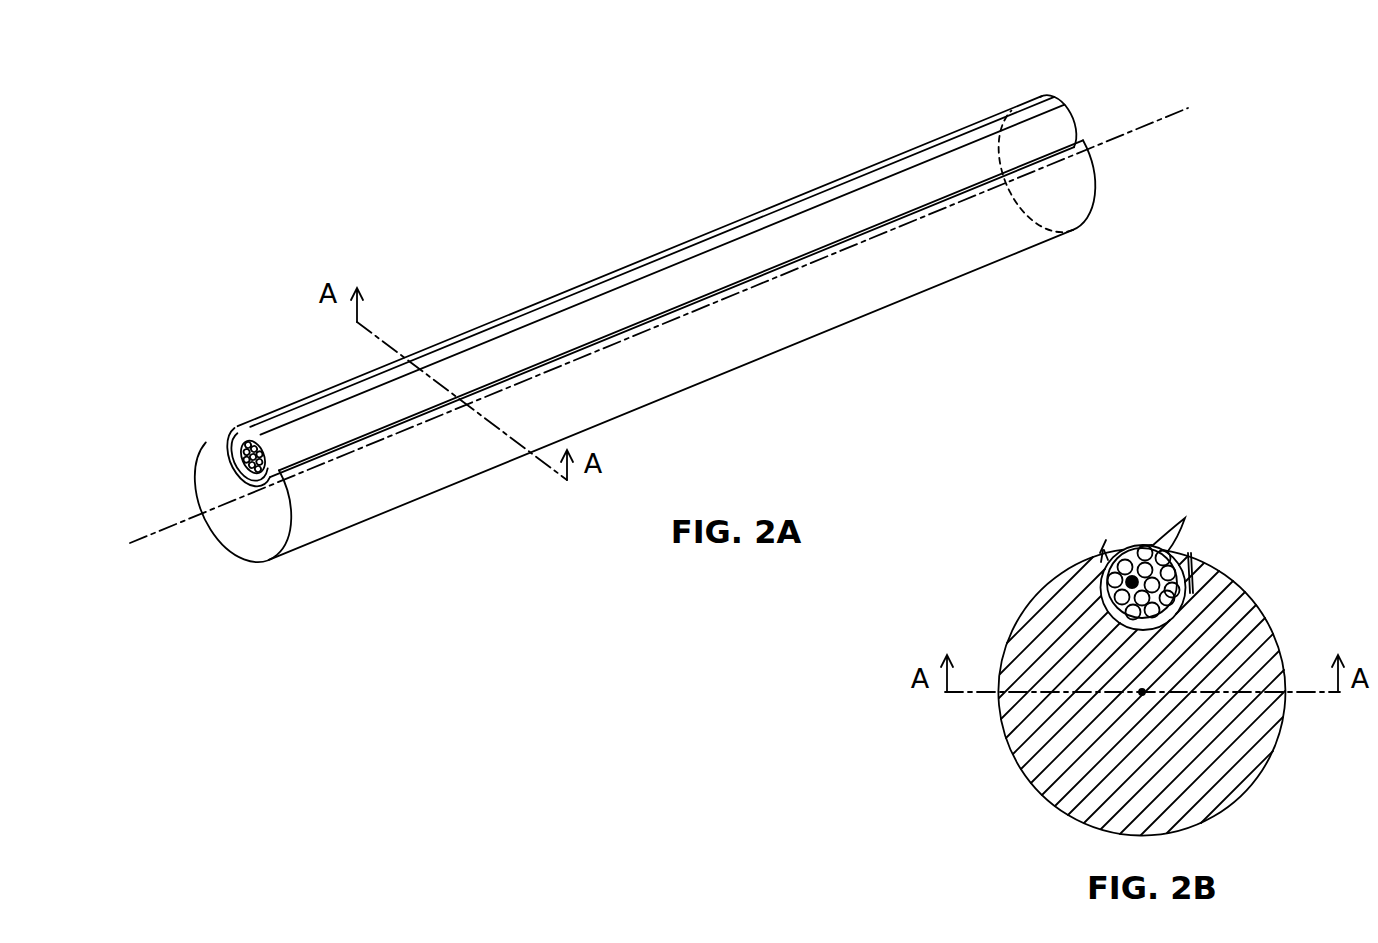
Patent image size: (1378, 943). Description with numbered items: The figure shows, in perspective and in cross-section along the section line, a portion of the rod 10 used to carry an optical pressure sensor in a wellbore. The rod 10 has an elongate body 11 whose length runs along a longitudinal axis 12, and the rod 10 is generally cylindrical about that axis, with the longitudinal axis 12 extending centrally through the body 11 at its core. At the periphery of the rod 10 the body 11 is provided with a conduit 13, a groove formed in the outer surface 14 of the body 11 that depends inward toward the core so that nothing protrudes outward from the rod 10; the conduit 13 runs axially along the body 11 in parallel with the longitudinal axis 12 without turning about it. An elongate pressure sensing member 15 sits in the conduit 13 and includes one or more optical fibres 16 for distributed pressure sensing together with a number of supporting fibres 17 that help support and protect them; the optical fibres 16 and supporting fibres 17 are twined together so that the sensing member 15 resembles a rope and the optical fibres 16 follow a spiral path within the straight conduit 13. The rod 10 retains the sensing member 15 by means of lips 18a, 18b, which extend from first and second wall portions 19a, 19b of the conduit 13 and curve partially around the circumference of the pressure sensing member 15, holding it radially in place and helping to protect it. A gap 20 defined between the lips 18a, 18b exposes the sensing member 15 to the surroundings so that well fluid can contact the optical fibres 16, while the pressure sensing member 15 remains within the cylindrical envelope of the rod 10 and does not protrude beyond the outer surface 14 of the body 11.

In FIG. 2A, the rod 10 is at (731, 147).
In FIG. 2B, the rod 10 is at (1309, 578).
In FIG. 2A, the elongate body 11 is at (243, 548).
In FIG. 2B, the elongate body 11 is at (1053, 773).
In FIG. 2A, the longitudinal axis 12 is at (1132, 140).
In FIG. 2B, the longitudinal axis 12 is at (1140, 695).
In FIG. 2A, the conduit 13 is at (241, 455).
In FIG. 2B, the conduit 13 is at (1102, 582).
In FIG. 2B, the outer surface 14 is at (1262, 630).
In FIG. 2A, the pressure sensing member 15 is at (547, 345).
In FIG. 2B, the pressure sensing member 15 is at (1153, 532).
In FIG. 2B, the optical fibres 16 is at (1104, 552).
In FIG. 2B, the supporting fibres 17 is at (1188, 520).
In FIG. 2B, the lip 18a is at (1104, 550).
In FIG. 2B, the lip 18b is at (1187, 550).
In FIG. 2B, the first wall portion 19a is at (1104, 550).
In FIG. 2B, the second wall portion 19b is at (1190, 556).
In FIG. 2A, the gap 20 is at (1088, 122).
In FIG. 2B, the gap 20 is at (1134, 534).